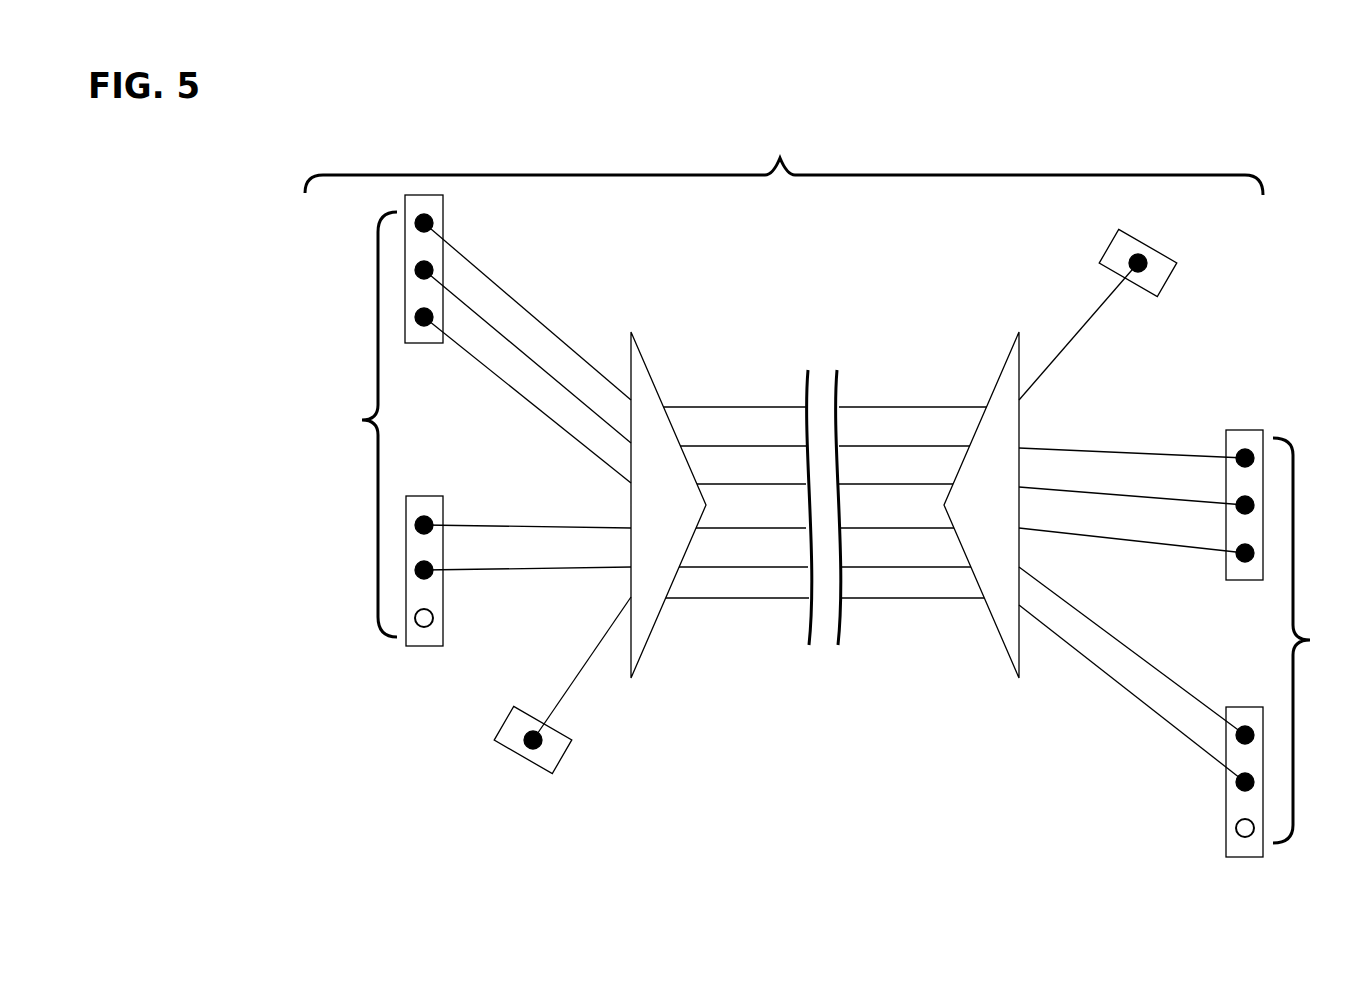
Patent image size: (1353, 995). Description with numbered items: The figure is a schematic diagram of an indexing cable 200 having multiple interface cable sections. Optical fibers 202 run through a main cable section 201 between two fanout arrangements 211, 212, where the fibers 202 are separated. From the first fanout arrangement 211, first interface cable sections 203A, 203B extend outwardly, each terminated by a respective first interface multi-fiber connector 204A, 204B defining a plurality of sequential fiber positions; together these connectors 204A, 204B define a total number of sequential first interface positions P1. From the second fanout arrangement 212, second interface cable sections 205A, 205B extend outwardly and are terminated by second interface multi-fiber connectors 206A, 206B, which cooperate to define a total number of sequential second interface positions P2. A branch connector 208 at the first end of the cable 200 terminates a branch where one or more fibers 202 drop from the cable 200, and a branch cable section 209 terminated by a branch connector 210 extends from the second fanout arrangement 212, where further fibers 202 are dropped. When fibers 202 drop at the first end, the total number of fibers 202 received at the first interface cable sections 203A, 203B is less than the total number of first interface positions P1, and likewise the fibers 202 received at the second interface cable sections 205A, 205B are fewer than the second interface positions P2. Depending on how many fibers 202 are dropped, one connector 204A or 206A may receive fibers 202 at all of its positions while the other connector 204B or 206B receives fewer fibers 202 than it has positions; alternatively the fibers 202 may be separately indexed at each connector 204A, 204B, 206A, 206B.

The indexing cable 200 is at (784, 161).
The main cable section 201 is at (908, 381).
The optical fibers 202 is at (725, 407).
The first interface cable section 203A is at (546, 291).
The first interface cable section 203B is at (528, 502).
The first interface multi-fiber connector 204A is at (425, 345).
The first interface multi-fiber connector 204B is at (425, 495).
The second interface cable section 205A is at (1112, 710).
The second interface cable section 205B is at (1150, 433).
The second interface multi-fiber connector 206A is at (1245, 857).
The second interface multi-fiber connector 206B is at (1245, 430).
The branch connector 208 is at (517, 755).
The branch cable section 209 is at (1077, 333).
The branch connector 210 is at (1160, 255).
The fanout arrangement 211 is at (640, 512).
The fanout arrangement 212 is at (962, 512).
The sequential first interface positions P1 is at (361, 424).
The sequential second interface positions P2 is at (1311, 640).